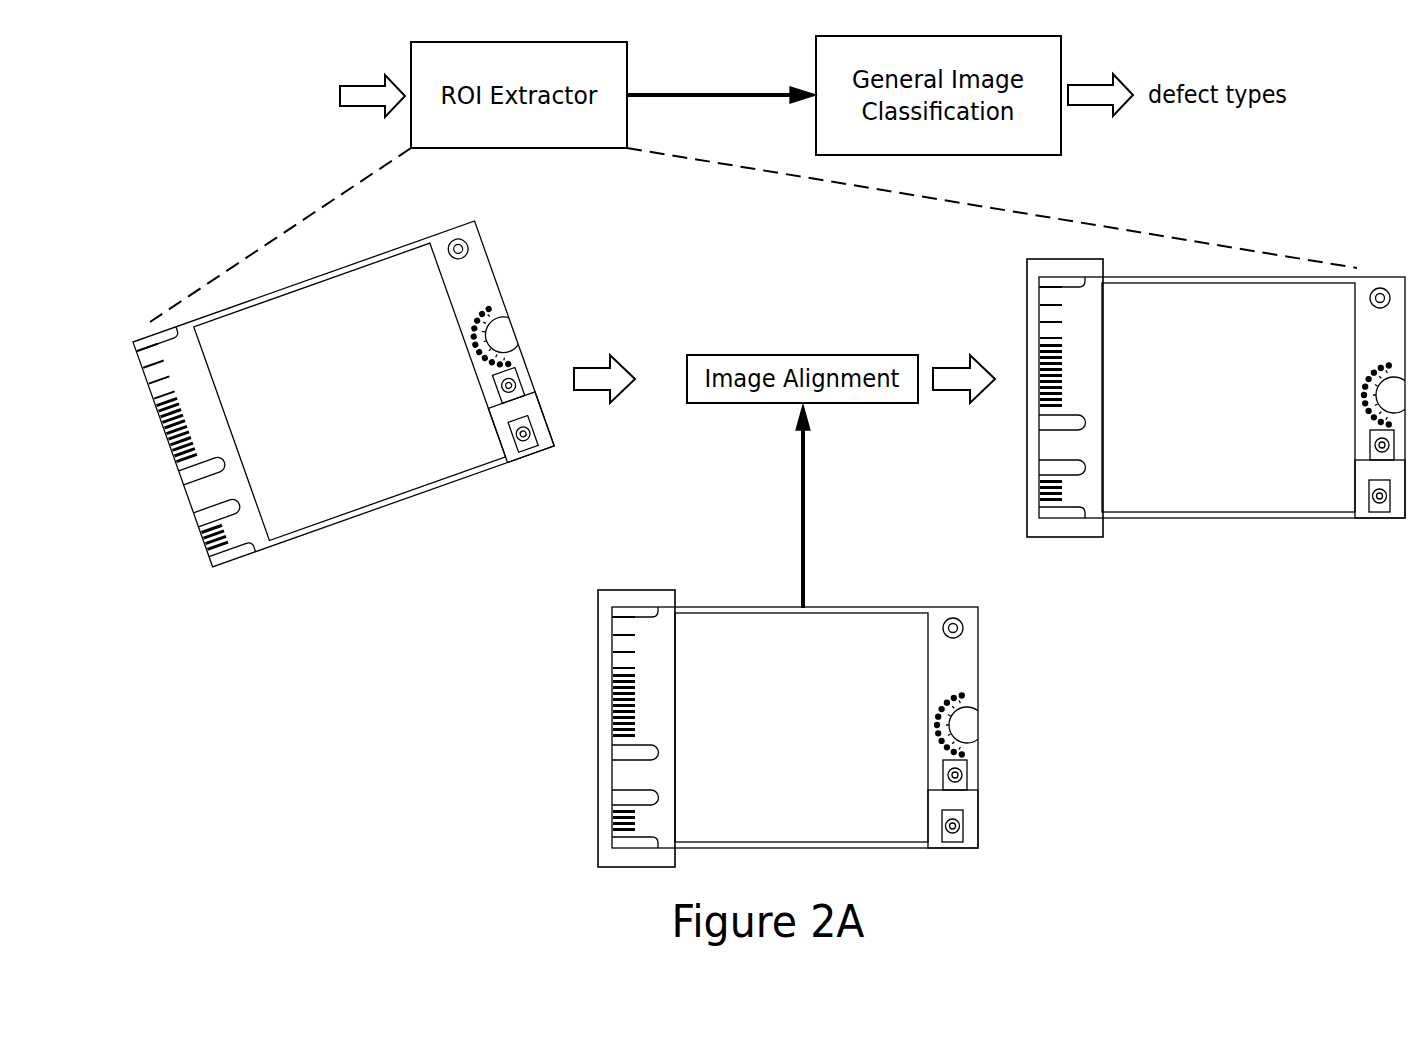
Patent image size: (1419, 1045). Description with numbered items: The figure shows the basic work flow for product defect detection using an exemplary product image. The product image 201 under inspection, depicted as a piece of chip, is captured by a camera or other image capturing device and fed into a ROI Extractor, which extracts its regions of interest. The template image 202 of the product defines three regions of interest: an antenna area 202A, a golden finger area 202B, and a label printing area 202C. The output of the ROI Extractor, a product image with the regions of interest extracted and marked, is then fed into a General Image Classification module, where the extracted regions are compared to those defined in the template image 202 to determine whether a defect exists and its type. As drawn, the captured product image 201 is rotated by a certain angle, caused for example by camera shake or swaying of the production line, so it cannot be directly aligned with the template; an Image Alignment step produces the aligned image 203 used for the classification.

The product image under inspection 201 is at (500, 303).
The template image 202 is at (973, 665).
The antenna area 202A is at (955, 847).
The golden finger area 202B is at (625, 605).
The label printing area 202C is at (827, 620).
The extracted ROI image 203 is at (1220, 518).